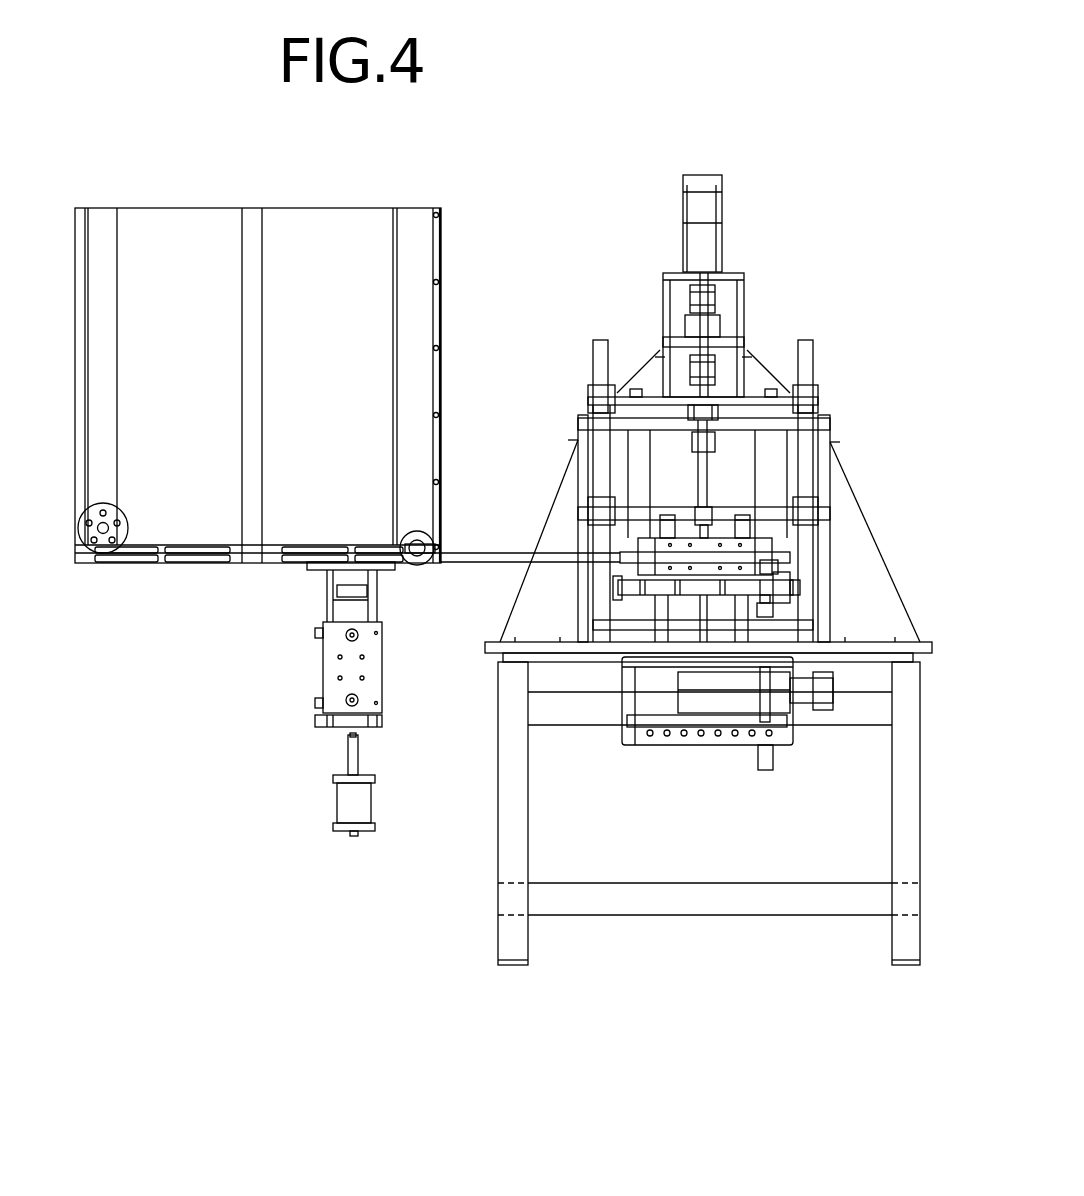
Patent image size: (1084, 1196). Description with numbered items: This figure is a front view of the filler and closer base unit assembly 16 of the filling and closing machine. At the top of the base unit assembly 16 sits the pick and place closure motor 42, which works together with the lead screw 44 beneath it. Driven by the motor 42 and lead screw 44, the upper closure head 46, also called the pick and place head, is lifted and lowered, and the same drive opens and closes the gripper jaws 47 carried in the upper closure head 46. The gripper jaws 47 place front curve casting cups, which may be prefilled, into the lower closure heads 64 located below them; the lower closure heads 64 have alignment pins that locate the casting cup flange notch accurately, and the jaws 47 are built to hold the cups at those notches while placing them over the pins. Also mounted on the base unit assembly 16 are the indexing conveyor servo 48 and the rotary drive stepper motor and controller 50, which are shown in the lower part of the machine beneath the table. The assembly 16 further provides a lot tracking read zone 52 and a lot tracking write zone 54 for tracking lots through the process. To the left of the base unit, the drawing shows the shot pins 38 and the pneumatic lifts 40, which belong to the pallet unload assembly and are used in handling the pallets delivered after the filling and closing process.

The filler and closer base unit assembly 16 is at (623, 267).
The shot pins 38 is at (428, 540).
The pneumatic lifts 40 is at (340, 674).
The pick and place closure motor 42 is at (720, 183).
The lead screw 44 is at (703, 475).
The upper closure head 46 is at (773, 547).
The gripper jaws 47 is at (707, 543).
The indexing conveyor servo 48 is at (815, 717).
The rotary drive stepper motor and controller 50 is at (773, 757).
The lot tracking read zone 52 is at (770, 567).
The lot tracking write zone 54 is at (797, 590).
The lower closure heads 64 is at (770, 618).